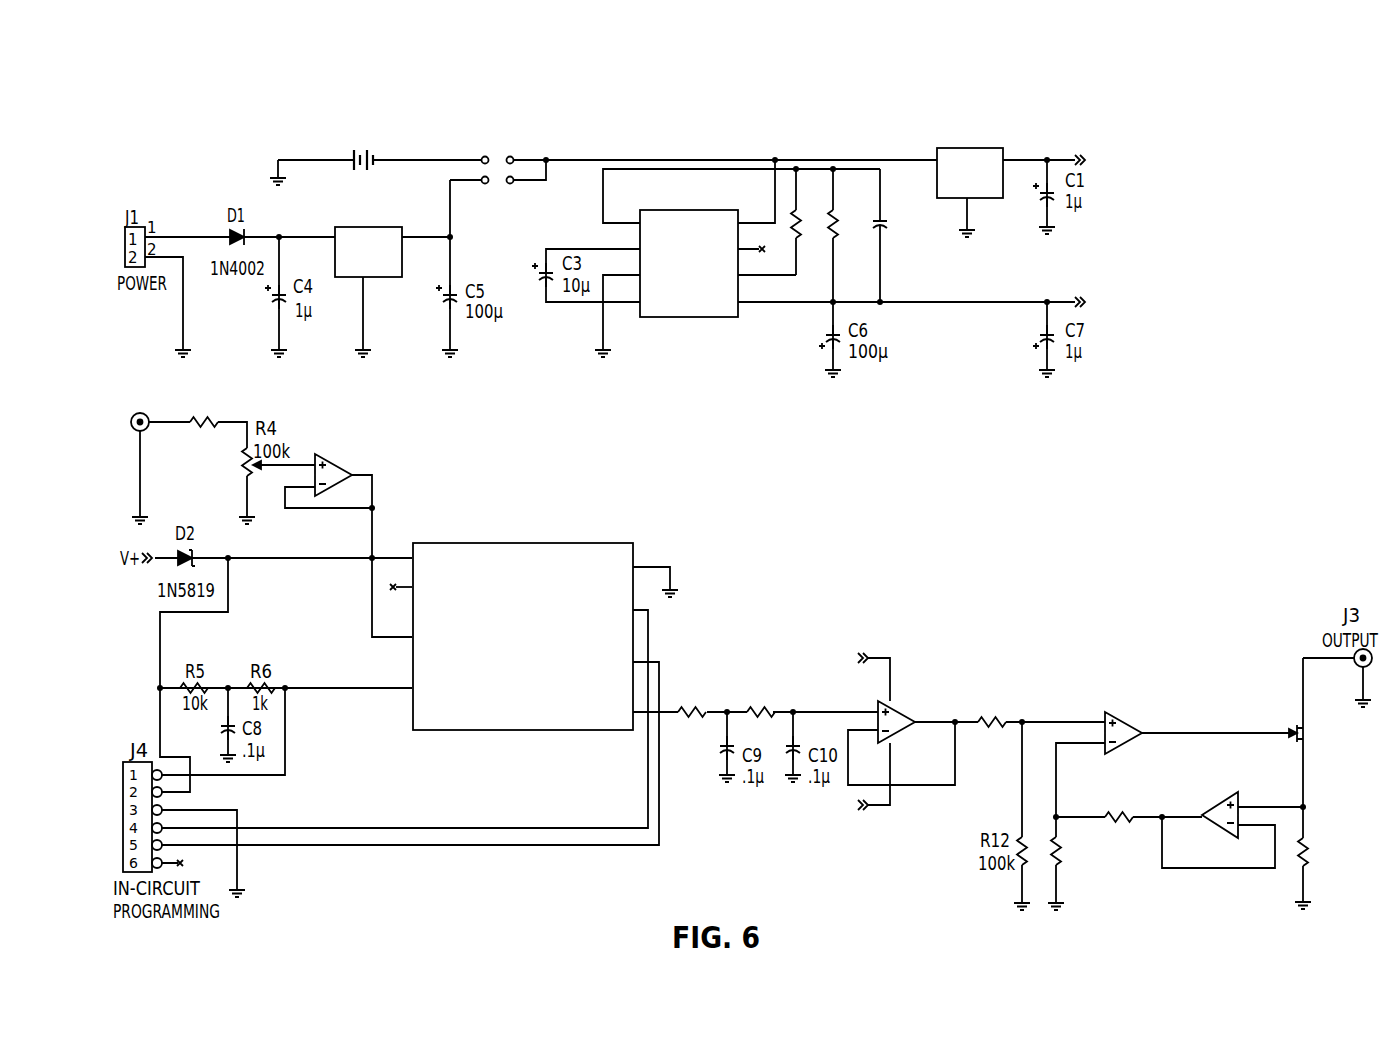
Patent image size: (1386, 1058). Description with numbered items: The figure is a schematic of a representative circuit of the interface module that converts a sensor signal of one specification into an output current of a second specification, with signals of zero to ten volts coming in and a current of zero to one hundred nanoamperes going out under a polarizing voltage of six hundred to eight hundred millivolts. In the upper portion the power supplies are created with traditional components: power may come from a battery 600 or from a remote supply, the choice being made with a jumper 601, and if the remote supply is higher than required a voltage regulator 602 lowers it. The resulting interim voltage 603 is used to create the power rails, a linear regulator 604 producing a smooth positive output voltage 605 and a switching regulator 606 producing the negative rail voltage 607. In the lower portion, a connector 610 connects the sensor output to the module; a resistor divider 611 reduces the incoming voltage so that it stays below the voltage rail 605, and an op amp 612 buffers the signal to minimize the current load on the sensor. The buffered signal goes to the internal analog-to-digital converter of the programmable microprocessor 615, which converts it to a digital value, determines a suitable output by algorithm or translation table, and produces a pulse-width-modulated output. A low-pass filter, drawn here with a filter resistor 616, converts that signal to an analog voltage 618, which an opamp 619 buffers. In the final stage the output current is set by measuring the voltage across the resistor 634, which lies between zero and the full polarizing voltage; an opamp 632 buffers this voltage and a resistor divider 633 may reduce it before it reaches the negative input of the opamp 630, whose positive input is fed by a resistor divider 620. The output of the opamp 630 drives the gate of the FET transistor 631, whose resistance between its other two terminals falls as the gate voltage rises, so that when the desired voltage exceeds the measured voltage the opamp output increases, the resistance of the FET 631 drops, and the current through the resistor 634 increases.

The battery 600 is at (383, 149).
The jumper 601 is at (516, 159).
The voltage regulator 602 is at (370, 245).
The interim voltage 603 is at (790, 213).
The linear regulator 604 is at (972, 166).
The output voltage 605 is at (1120, 160).
The switching regulator 606 is at (691, 258).
The negative rail voltage 607 is at (1121, 304).
The connector 610 is at (150, 445).
The resistor divider 611 is at (226, 419).
The op amp 612 is at (348, 517).
The programmable microprocessor 615 is at (539, 637).
The filter resistor R7 616 is at (710, 709).
The analog voltage 618 is at (786, 709).
The opamp 619 is at (906, 731).
The resistor divider 620 is at (990, 710).
The opamp 630 is at (1173, 747).
The FET transistor 631 is at (1302, 748).
The opamp 632 is at (1232, 817).
The resistor divider 633 is at (1125, 842).
The resistor 634 is at (1339, 868).